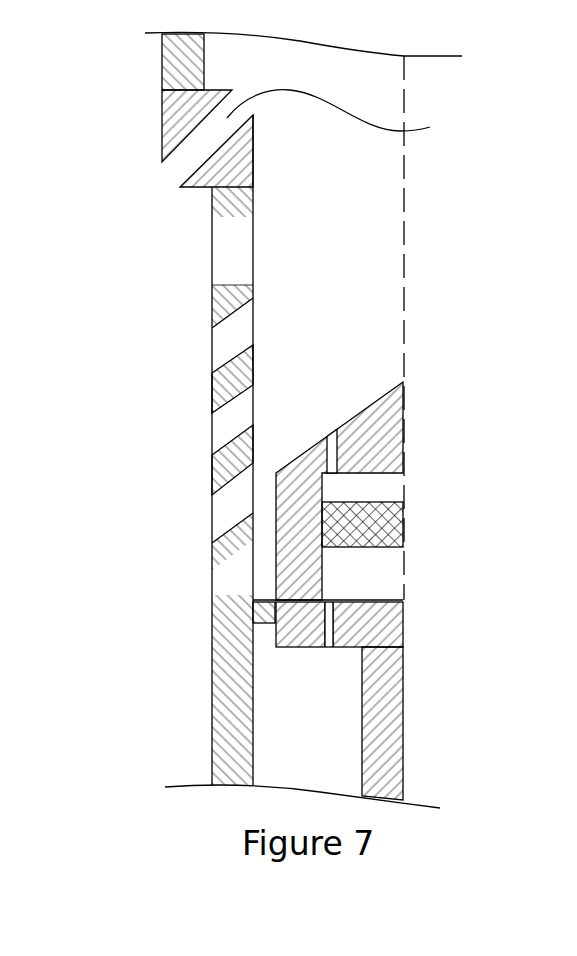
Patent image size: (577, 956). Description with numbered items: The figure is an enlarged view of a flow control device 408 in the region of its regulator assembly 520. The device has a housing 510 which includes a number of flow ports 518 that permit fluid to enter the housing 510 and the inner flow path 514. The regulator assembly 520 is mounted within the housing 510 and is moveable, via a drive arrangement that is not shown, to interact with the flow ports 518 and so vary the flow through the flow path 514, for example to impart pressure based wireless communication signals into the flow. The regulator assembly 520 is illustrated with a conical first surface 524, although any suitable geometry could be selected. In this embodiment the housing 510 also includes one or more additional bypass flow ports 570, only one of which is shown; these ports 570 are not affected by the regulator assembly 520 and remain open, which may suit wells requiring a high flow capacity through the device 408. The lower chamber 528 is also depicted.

The flow control device 408 is at (186, 271).
The bypass flow port 570 is at (430, 127).
The inner flow path 514 is at (348, 328).
The housing 510 is at (228, 665).
The flow ports 518 is at (222, 517).
The conical first surface 524 is at (375, 397).
The regulator assembly 520 is at (417, 524).
The lower chamber 528 is at (302, 704).